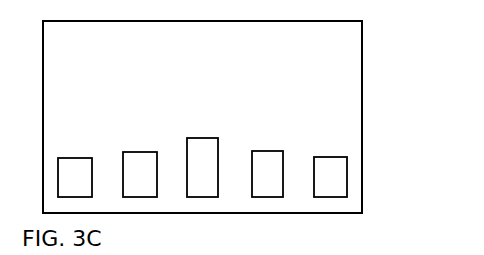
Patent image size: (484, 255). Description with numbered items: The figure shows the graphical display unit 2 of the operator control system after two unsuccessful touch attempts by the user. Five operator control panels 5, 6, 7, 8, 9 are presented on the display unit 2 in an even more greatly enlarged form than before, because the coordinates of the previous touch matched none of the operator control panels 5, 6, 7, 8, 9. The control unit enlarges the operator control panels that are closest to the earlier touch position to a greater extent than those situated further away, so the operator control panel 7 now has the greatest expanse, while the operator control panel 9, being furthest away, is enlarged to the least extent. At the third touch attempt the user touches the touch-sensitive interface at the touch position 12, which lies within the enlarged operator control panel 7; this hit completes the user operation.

The graphical display unit 2 is at (362, 89).
The operator control panel 5 is at (85, 158).
The operator control panel 6 is at (145, 152).
The operator control panel 7 is at (219, 157).
The operator control panel 8 is at (270, 151).
The operator control panel 9 is at (325, 157).
The touch position 12 is at (198, 143).